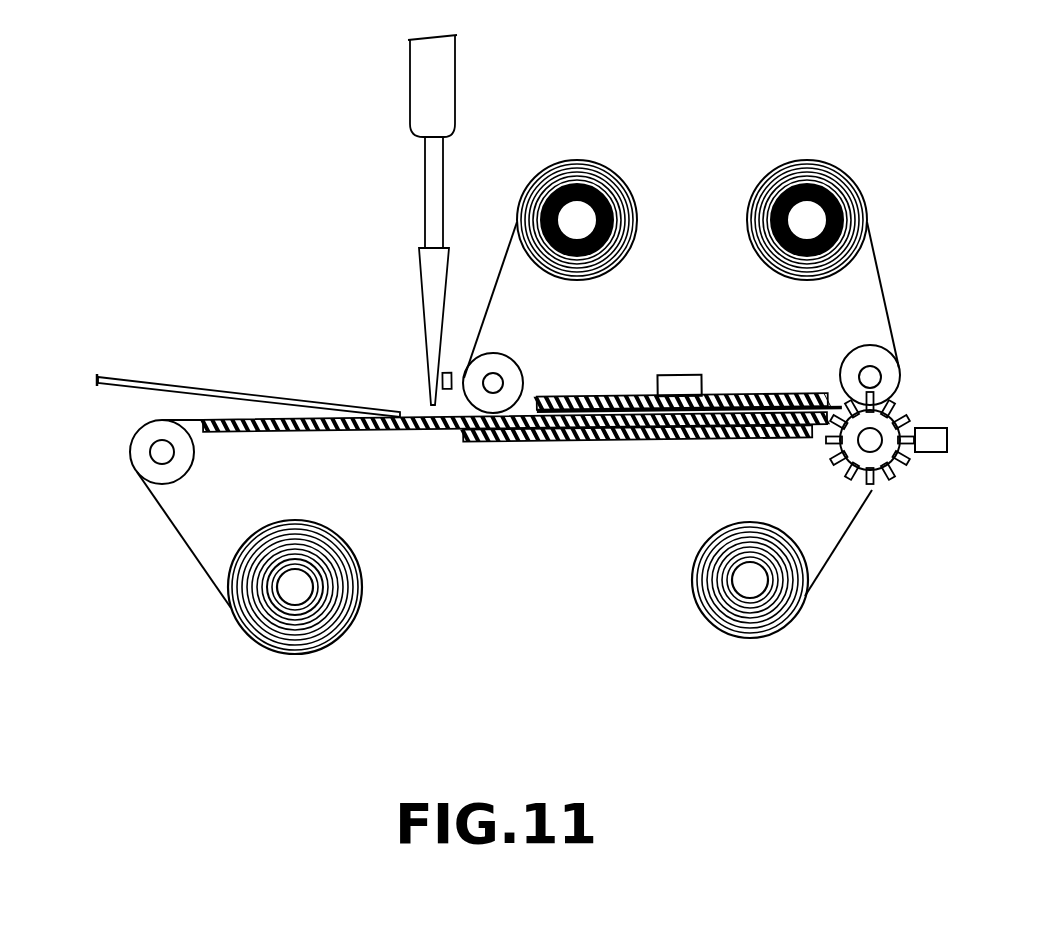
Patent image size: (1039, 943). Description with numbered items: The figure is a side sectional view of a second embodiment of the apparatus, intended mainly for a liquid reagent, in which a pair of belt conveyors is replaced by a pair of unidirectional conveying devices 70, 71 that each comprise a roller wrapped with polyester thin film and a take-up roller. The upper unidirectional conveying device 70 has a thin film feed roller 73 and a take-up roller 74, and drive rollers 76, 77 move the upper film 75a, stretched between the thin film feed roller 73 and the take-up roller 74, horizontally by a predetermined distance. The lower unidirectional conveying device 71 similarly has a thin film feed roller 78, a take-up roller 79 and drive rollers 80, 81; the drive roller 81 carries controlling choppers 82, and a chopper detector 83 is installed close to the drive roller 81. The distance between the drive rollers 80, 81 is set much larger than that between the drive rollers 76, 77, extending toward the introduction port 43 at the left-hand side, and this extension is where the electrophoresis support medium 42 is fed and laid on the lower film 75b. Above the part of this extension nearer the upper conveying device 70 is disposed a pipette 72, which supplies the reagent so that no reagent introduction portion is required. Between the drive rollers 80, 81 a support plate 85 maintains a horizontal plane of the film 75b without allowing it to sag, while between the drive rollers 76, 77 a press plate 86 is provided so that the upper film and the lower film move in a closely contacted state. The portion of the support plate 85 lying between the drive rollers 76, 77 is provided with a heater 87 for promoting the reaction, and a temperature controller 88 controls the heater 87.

The electrophoresis support medium 42 is at (170, 392).
The introduction port 43 is at (138, 407).
The upper unidirectional conveying device 70 is at (694, 186).
The lower unidirectional conveying device 71 is at (546, 534).
The pipette 72 is at (423, 207).
The thin film feed roller 73 is at (571, 160).
The take-up roller 74 is at (807, 160).
The film (band-shaped conveying member) 75a is at (886, 275).
The film (band-shaped conveying member) 75b is at (182, 540).
The drive roller 76 is at (510, 372).
The drive roller 77 is at (848, 357).
The thin film feed roller 78 is at (362, 597).
The take-up roller 79 is at (697, 607).
The drive roller 80 is at (135, 456).
The drive roller 81 is at (888, 430).
The controlling choppers 82 is at (893, 484).
The chopper detector 83 is at (948, 440).
The support plate 85 is at (395, 432).
The press plate 86 is at (600, 398).
The heater 87 is at (593, 442).
The temperature controller 88 is at (684, 377).